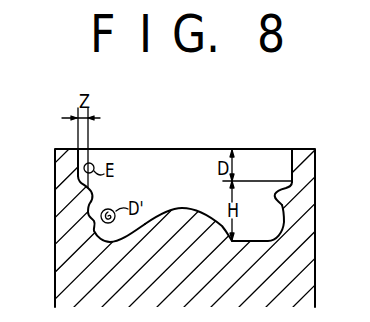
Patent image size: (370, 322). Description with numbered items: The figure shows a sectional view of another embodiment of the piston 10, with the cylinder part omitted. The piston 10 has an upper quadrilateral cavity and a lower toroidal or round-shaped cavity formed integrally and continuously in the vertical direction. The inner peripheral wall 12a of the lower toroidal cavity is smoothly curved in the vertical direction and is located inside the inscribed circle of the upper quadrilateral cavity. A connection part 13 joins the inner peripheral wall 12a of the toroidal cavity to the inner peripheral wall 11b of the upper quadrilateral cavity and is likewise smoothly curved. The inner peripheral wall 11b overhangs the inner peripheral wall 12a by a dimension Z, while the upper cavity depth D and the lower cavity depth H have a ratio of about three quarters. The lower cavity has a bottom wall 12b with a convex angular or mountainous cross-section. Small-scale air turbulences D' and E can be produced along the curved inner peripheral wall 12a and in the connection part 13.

The piston 10 is at (296, 208).
The inner peripheral wall of the upper quadrilateral cavity 11b is at (80, 147).
The inner peripheral wall of the lower toroidal cavity 12a is at (95, 237).
The bottom wall of the lower toroidal cavity 12b is at (152, 222).
The connection part 13 is at (96, 189).